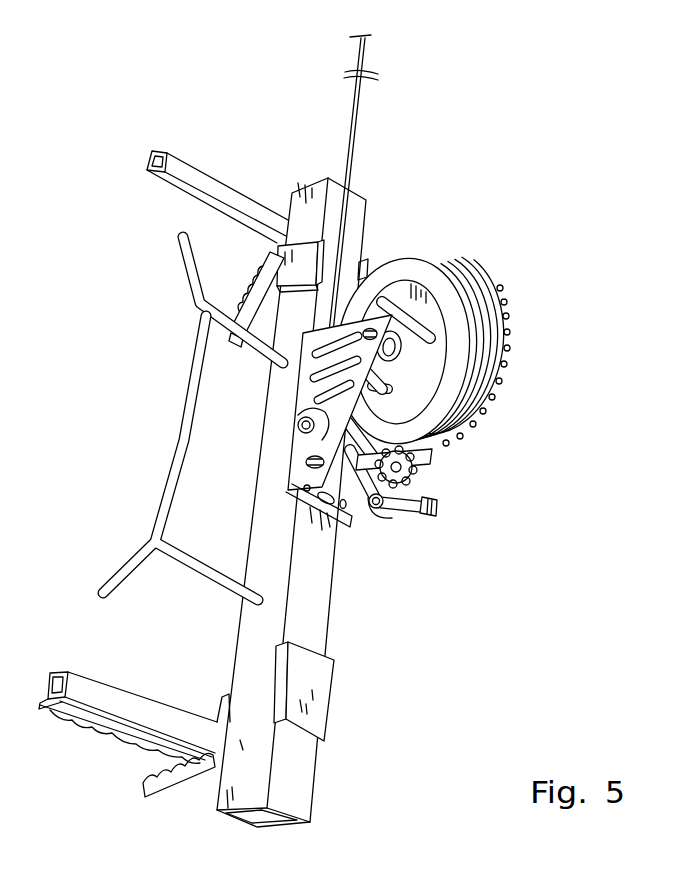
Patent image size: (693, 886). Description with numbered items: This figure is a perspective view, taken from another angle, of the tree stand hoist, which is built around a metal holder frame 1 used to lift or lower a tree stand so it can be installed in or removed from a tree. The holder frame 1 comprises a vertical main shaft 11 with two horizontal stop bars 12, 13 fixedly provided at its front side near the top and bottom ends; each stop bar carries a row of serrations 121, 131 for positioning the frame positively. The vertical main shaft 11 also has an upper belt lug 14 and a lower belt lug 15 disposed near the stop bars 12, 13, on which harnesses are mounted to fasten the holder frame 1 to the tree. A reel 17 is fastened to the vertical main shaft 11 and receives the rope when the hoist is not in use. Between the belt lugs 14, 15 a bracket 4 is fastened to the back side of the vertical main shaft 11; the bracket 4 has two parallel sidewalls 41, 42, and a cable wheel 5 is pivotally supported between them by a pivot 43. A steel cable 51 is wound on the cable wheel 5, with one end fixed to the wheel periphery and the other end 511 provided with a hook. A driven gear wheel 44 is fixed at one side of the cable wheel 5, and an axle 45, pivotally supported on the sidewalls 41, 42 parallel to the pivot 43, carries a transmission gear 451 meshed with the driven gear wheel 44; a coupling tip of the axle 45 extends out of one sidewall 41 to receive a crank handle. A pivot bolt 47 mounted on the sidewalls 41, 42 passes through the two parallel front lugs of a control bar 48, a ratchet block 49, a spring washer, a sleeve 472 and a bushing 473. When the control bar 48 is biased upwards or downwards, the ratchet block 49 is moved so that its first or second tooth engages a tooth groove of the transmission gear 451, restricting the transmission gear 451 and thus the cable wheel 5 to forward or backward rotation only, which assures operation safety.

The holder frame 1 is at (408, 153).
The vertical main shaft 11 is at (373, 246).
The horizontal stop bar 12 is at (183, 153).
The serrations 121 is at (240, 262).
The horizontal stop bar 13 is at (94, 676).
The serrations 131 is at (127, 757).
The upper belt lug 14 is at (320, 257).
The lower belt lug 15 is at (275, 678).
The reel 17 is at (173, 448).
The bracket 4 is at (267, 468).
The sidewall 41 is at (423, 472).
The sidewall 42 is at (363, 369).
The pivot 43 is at (310, 361).
The driven gear wheel 44 is at (506, 360).
The axle 45 is at (443, 433).
The transmission gear 451 is at (404, 487).
The pivot bolt 47 is at (303, 421).
The sleeve 472 is at (348, 493).
The bushing 473 is at (374, 506).
The control bar 48 is at (433, 516).
The ratchet block 49 is at (388, 521).
The cable wheel 5 is at (455, 260).
The steel cable 51 is at (477, 317).
The other end of steel cable 511 is at (364, 53).